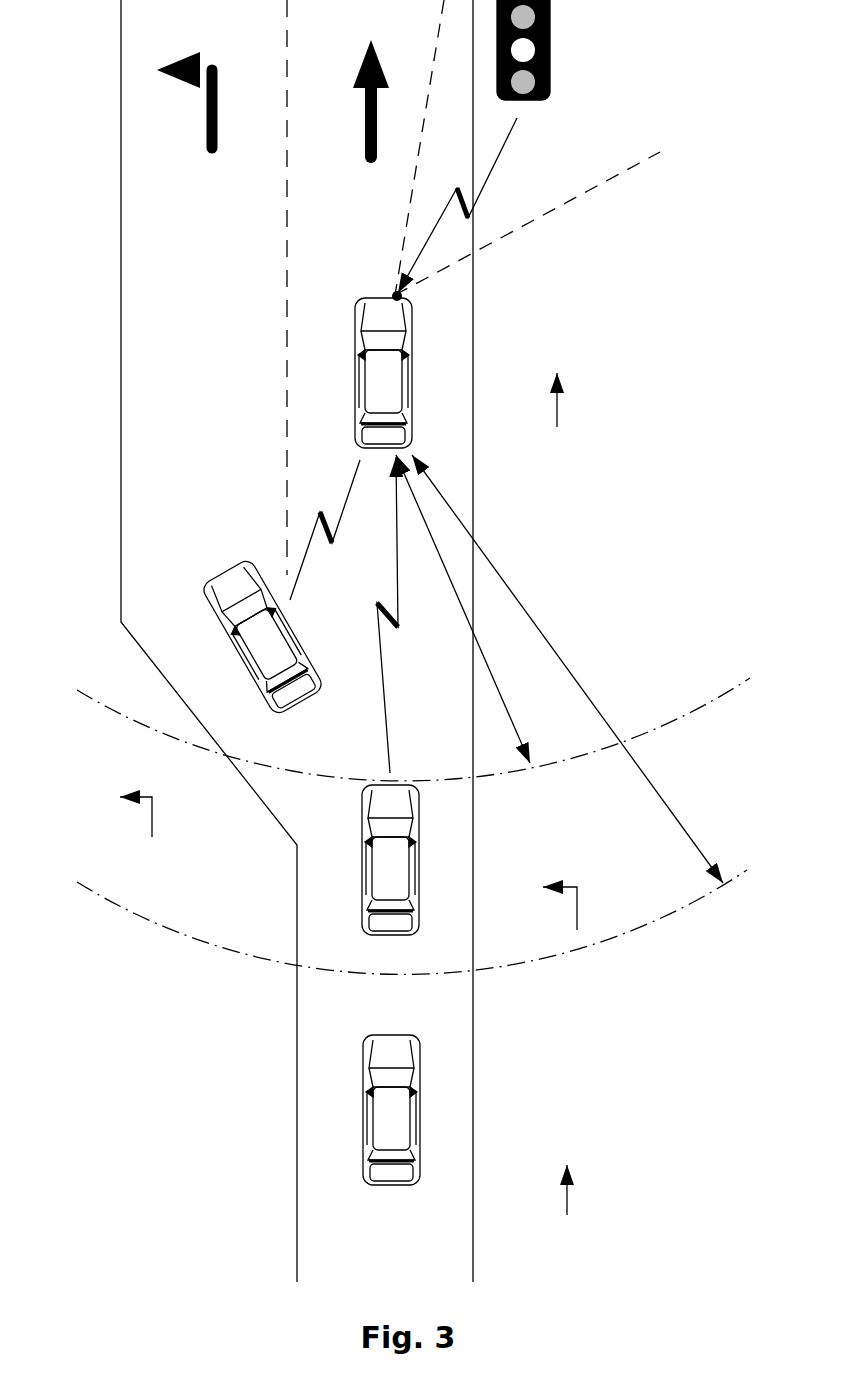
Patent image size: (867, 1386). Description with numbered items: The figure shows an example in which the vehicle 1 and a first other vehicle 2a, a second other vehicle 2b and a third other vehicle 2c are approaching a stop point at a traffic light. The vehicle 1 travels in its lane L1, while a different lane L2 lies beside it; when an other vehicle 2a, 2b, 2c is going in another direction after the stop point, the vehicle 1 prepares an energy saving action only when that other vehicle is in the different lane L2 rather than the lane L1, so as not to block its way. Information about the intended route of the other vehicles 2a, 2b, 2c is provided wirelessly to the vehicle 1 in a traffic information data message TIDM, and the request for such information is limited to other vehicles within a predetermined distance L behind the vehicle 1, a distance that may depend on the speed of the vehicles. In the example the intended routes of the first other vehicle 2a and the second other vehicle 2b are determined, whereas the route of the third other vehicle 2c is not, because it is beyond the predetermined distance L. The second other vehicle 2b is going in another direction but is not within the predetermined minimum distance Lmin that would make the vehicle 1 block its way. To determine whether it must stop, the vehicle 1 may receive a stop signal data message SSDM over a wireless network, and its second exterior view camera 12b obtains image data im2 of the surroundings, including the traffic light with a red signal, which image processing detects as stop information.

The vehicle 1 is at (433, 377).
The second exterior view camera 12b is at (410, 300).
The first other vehicle 2a is at (230, 663).
The second other vehicle 2b is at (433, 888).
The third other vehicle 2c is at (432, 1165).
The lane of the vehicle L1 is at (378, 141).
The different lane L2 is at (184, 147).
The predetermined distance L is at (567, 669).
The predetermined minimum distance Lmin is at (488, 609).
The traffic information data message TIDM is at (374, 615).
The stop signal data message SSDM is at (482, 205).
The image data im2 is at (527, 147).